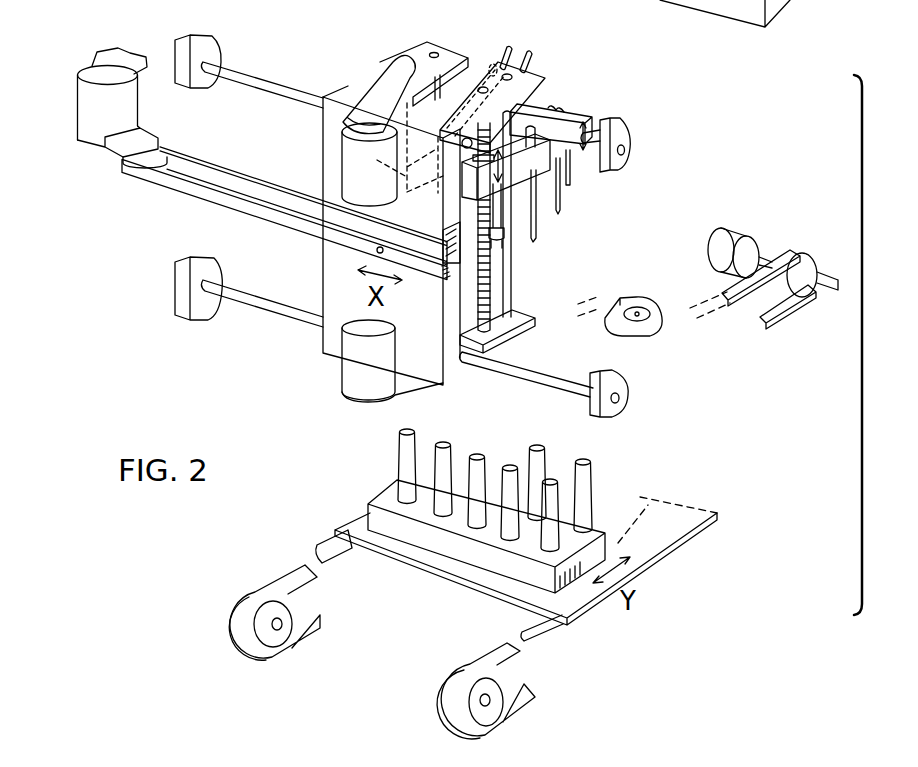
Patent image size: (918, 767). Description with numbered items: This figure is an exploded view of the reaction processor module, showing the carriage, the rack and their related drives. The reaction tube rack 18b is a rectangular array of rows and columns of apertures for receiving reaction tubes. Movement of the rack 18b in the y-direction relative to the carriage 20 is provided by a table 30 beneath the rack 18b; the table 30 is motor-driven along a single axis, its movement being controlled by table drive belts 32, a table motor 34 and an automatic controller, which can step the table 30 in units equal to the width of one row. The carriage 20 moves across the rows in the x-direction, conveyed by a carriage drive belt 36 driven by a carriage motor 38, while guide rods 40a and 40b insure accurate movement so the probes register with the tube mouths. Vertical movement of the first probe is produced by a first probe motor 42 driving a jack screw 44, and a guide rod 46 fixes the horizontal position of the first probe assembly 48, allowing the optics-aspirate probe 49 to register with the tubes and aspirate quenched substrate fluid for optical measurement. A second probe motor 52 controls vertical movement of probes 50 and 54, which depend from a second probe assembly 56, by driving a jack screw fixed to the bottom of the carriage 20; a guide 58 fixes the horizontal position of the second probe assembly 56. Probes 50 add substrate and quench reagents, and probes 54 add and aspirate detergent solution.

The reaction tube rack 18b is at (373, 517).
The carriage 20 is at (328, 275).
The table 30 is at (658, 537).
The table drive belts 32 is at (313, 576).
The table motor 34 is at (733, 230).
The carriage drive belt 36 is at (203, 198).
The carriage motor 38 is at (96, 124).
The guide rod 40a is at (264, 310).
The guide rod 40b is at (278, 92).
The first probe motor 42 is at (376, 381).
The jack screw 44 is at (478, 290).
The guide rod 46 is at (512, 295).
The first probe assembly 48 is at (538, 162).
The optics-aspirate probe 49 is at (506, 247).
The probes 50 is at (562, 102).
The second probe motor 52 is at (372, 185).
The probes 54 is at (504, 46).
The second probe assembly 56 is at (543, 110).
The guide 58 is at (437, 51).